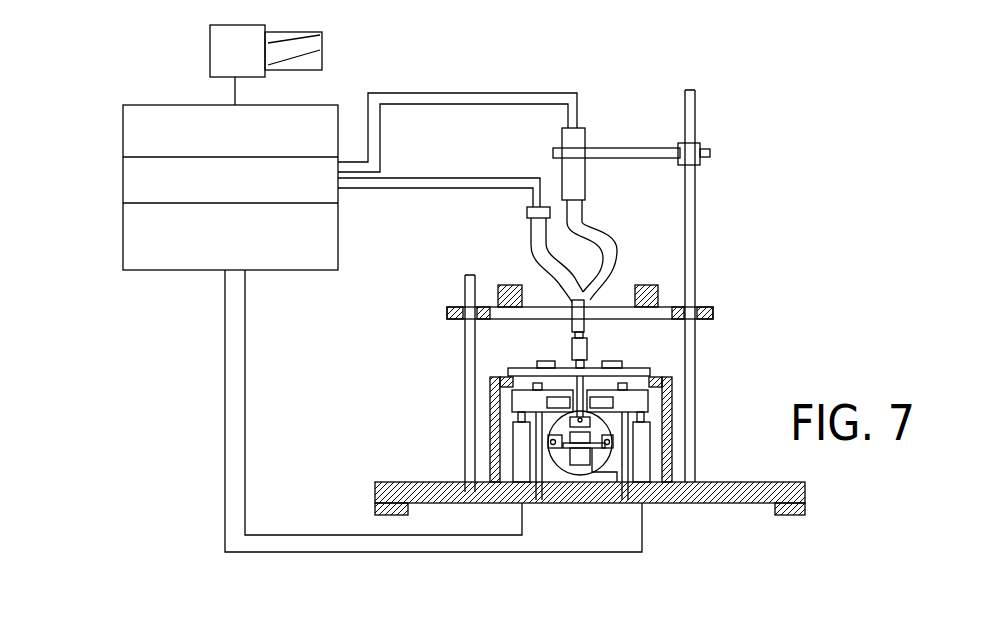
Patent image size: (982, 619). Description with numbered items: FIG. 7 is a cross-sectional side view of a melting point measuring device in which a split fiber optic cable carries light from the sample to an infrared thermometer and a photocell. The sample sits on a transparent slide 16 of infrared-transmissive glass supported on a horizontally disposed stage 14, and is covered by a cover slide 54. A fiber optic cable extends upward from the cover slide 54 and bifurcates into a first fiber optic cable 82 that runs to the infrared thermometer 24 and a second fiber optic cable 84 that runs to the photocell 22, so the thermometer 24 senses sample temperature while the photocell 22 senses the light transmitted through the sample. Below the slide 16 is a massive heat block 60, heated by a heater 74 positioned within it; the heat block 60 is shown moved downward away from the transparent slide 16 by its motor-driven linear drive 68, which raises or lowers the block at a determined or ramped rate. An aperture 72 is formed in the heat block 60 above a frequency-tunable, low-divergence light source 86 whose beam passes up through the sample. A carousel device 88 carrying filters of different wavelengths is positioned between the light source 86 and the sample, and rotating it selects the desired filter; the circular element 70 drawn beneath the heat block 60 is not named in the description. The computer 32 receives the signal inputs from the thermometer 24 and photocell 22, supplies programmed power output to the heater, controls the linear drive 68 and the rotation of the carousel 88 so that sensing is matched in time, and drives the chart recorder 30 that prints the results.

The stage 14 is at (493, 375).
The transparent slide 16 is at (528, 368).
The photocell 22 is at (527, 213).
The infrared thermometer 24 is at (572, 174).
The chart recorder 30 is at (210, 48).
The computer 32 is at (126, 106).
The cover slide 54 is at (597, 367).
The heat block 60 is at (558, 400).
The linear drive 68 is at (518, 473).
The rotating stage 70 is at (560, 460).
The aperture 72 is at (612, 365).
The heater 74 is at (562, 368).
The first fiber optic cable 82 is at (603, 252).
The second fiber optic cable 84 is at (535, 253).
The tunable light source 86 is at (607, 502).
The carousel device 88 is at (560, 497).